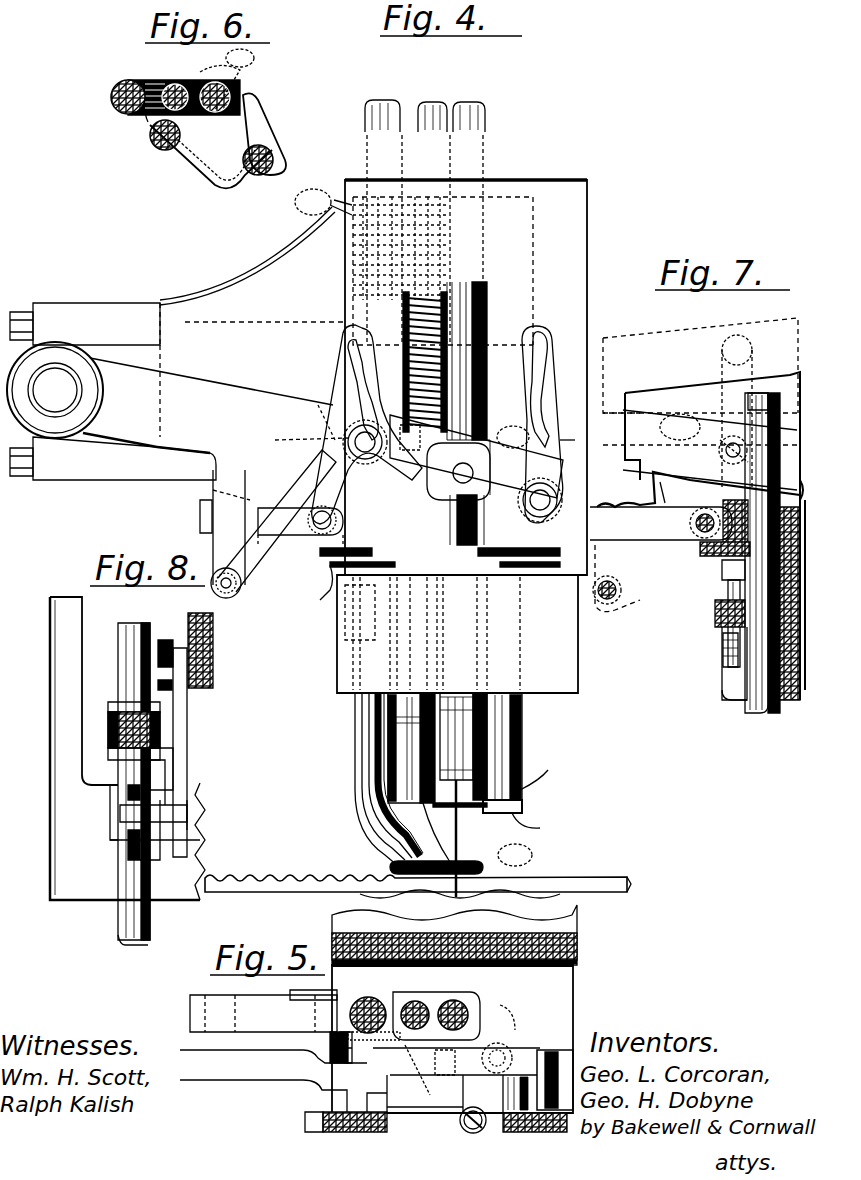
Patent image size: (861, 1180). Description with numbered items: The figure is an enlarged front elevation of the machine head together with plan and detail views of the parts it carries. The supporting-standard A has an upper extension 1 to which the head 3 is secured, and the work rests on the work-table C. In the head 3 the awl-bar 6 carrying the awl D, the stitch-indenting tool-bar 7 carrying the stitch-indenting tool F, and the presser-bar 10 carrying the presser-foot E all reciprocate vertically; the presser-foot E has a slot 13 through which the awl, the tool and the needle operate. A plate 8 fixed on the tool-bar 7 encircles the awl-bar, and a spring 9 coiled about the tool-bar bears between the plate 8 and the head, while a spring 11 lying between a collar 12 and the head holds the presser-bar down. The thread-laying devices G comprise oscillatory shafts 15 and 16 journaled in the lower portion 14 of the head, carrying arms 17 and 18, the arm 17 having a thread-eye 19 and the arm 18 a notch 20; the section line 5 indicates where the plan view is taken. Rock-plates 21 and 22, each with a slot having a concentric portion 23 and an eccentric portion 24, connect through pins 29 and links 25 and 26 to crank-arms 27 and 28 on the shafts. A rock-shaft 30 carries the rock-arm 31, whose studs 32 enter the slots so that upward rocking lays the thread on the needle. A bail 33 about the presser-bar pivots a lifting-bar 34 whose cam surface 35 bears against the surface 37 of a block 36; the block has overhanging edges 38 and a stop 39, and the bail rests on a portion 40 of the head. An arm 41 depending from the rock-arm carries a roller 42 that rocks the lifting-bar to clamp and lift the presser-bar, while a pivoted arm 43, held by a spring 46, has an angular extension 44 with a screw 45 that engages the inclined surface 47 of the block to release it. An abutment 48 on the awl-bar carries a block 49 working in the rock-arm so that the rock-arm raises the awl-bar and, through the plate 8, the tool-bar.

In FIG. 4, the upper extension 1 is at (580, 434).
In FIG. 7, the upper extension 1 is at (598, 432).
In FIG. 4, the head 3 is at (466, 355).
In FIG. 7, the head 3 is at (728, 705).
In FIG. 8, the head 3 is at (125, 748).
In FIG. 5, the head 3 is at (452, 1039).
In FIG. 4, the section line 5 5 is at (655, 318).
In FIG. 7, the section line 5 5 is at (701, 377).
In FIG. 4, the awl-bar 6 is at (488, 120).
In FIG. 6, the awl-bar 6 is at (248, 90).
In FIG. 5, the awl-bar 6 is at (465, 1010).
In FIG. 4, the stitch-indenting tool-bar 7 is at (432, 128).
In FIG. 6, the stitch-indenting tool-bar 7 is at (176, 85).
In FIG. 5, the stitch-indenting tool-bar 7 is at (418, 1003).
In FIG. 4, the plate 8 is at (487, 360).
In FIG. 5, the plate 8 is at (450, 1005).
In FIG. 4, the spring 9 is at (447, 332).
In FIG. 4, the presser-bar 10 is at (375, 112).
In FIG. 6, the presser-bar 10 is at (122, 110).
In FIG. 7, the presser-bar 10 is at (758, 718).
In FIG. 8, the presser-bar 10 is at (122, 660).
In FIG. 5, the presser-bar 10 is at (375, 1005).
In FIG. 4, the spring 11 is at (256, 247).
In FIG. 4, the collar 12 is at (430, 330).
In FIG. 4, the slot 13 is at (515, 855).
In FIG. 6, the slot 13 is at (212, 85).
In FIG. 4, the lower portion of the head 14 is at (457, 634).
In FIG. 7, the lower portion of the head 14 is at (790, 705).
In FIG. 8, the lower portion of the head 14 is at (138, 841).
In FIG. 5, the lower portion of the head 14 is at (551, 1004).
In FIG. 4, the oscillatory shaft 15 is at (395, 770).
In FIG. 6, the oscillatory shaft 15 is at (153, 143).
In FIG. 5, the oscillatory shaft 15 is at (418, 1074).
In FIG. 4, the oscillatory shaft 16 is at (522, 792).
In FIG. 5, the oscillatory shaft 16 is at (480, 1070).
In FIG. 4, the arm 17 is at (458, 805).
In FIG. 6, the arm 17 is at (200, 172).
In FIG. 5, the arm 17 is at (445, 1092).
In FIG. 4, the arm 18 is at (461, 818).
In FIG. 6, the arm 18 is at (262, 115).
In FIG. 5, the arm 18 is at (510, 1010).
In FIG. 6, the thread-eye 19 is at (245, 92).
In FIG. 4, the notch 20 is at (478, 832).
In FIG. 6, the notch 20 is at (262, 100).
In FIG. 4, the rock-plate 21 is at (340, 332).
In FIG. 5, the rock-plate 21 is at (330, 1134).
In FIG. 4, the rock-plate 22 is at (542, 416).
In FIG. 5, the rock-plate 22 is at (555, 1134).
In FIG. 4, the concentric portion 23 is at (307, 430).
In FIG. 4, the eccentric portion 24 is at (355, 368).
In FIG. 4, the link 25 is at (328, 592).
In FIG. 5, the link 25 is at (325, 1110).
In FIG. 4, the link 26 is at (540, 580).
In FIG. 7, the link 26 is at (601, 626).
In FIG. 5, the link 26 is at (485, 1130).
In FIG. 4, the crank-arm 27 is at (400, 570).
In FIG. 5, the crank-arm 27 is at (400, 1115).
In FIG. 4, the crank-arm 28 is at (500, 575).
In FIG. 5, the crank-arm 28 is at (462, 1095).
In FIG. 4, the pin 29 is at (335, 556).
In FIG. 4, the rock-shaft 30 is at (55, 390).
In FIG. 4, the rock-arm 31 is at (208, 405).
In FIG. 8, the rock-arm 31 is at (213, 656).
In FIG. 5, the rock-arm 31 is at (283, 1081).
In FIG. 4, the studs 32 is at (348, 443).
In FIG. 5, the studs 32 is at (355, 1135).
In FIG. 7, the yoke or bail 33 is at (710, 553).
In FIG. 8, the yoke or bail 33 is at (108, 728).
In FIG. 5, the yoke or bail 33 is at (351, 984).
In FIG. 4, the lifting-bar 34 is at (300, 525).
In FIG. 7, the lifting-bar 34 is at (661, 523).
In FIG. 8, the lifting-bar 34 is at (160, 718).
In FIG. 5, the lifting-bar 34 is at (263, 1013).
In FIG. 4, the cam surface 35 is at (527, 563).
In FIG. 7, the cam surface 35 is at (723, 508).
In FIG. 7, the block 36 is at (722, 585).
In FIG. 7, the lifting-bar-engaging surface 37 is at (718, 565).
In FIG. 7, the overhanging edges 38 is at (730, 478).
In FIG. 8, the overhanging edges 38 is at (110, 705).
In FIG. 5, the overhanging edges 38 is at (380, 985).
In FIG. 7, the stop 39 is at (700, 550).
In FIG. 8, the stop 39 is at (120, 750).
In FIG. 7, the portion of the head 40 is at (715, 620).
In FIG. 8, the portion of the head 40 is at (165, 755).
In FIG. 4, the arm 41 is at (225, 524).
In FIG. 7, the arm 41 is at (698, 488).
In FIG. 4, the projection 42 is at (242, 586).
In FIG. 7, the projection 42 is at (621, 595).
In FIG. 4, the pivoted arm 43 is at (330, 492).
In FIG. 8, the pivoted arm 43 is at (188, 760).
In FIG. 5, the pivoted arm 43 is at (340, 1050).
In FIG. 7, the angular extension 44 is at (720, 640).
In FIG. 8, the angular extension 44 is at (135, 818).
In FIG. 7, the set pin or screw 45 is at (722, 610).
In FIG. 8, the set pin or screw 45 is at (128, 793).
In FIG. 4, the spring 46 is at (505, 450).
In FIG. 7, the spring 46 is at (706, 412).
In FIG. 8, the spring 46 is at (160, 702).
In FIG. 5, the spring 46 is at (372, 1050).
In FIG. 7, the inclined surface 47 is at (725, 570).
In FIG. 4, the abutment 48 is at (513, 437).
In FIG. 5, the abutment 48 is at (480, 1040).
In FIG. 4, the block 49 is at (458, 471).
In FIG. 5, the block 49 is at (450, 1075).
In FIG. 4, the supporting-standard A is at (113, 391).
In FIG. 4, the work-table C is at (555, 897).
In FIG. 4, the awl D is at (437, 855).
In FIG. 6, the awl D is at (227, 78).
In FIG. 4, the presser-foot E is at (432, 852).
In FIG. 6, the presser-foot E is at (180, 62).
In FIG. 4, the stitch-indenting tool F is at (390, 832).
In FIG. 6, the stitch-indenting tool F is at (175, 160).
In FIG. 4, the thread-laying devices G is at (470, 800).
In FIG. 6, the thread-laying devices G is at (262, 175).
In FIG. 4, the work plate W is at (612, 888).